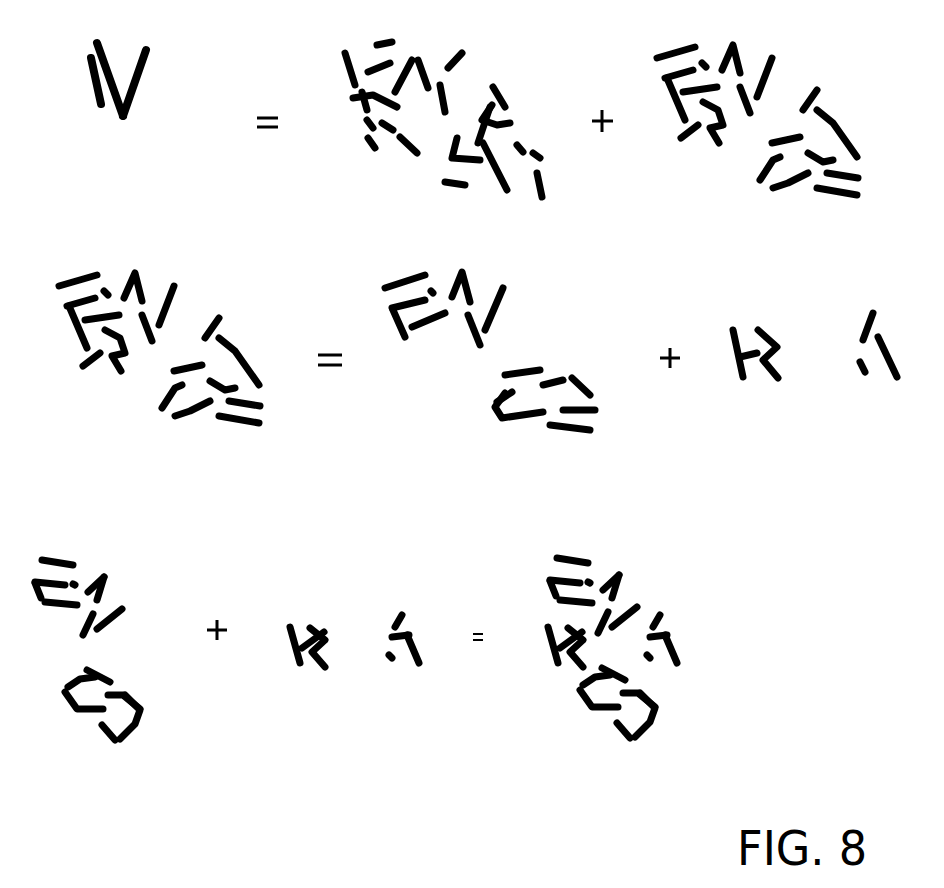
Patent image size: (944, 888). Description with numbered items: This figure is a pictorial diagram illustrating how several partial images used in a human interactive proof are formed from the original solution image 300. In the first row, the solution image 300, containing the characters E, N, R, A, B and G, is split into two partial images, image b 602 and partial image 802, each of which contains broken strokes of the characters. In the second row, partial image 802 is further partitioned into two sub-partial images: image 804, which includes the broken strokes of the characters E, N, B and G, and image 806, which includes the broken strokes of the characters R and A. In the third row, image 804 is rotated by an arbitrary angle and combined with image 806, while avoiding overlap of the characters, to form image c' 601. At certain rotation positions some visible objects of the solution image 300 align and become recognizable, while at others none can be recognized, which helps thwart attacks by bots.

The solution image 300 is at (163, 36).
The image b 602 is at (505, 42).
The partial image 802 is at (810, 38).
The image 804 is at (462, 263).
The image 806 is at (802, 267).
The image c' 601 is at (640, 563).